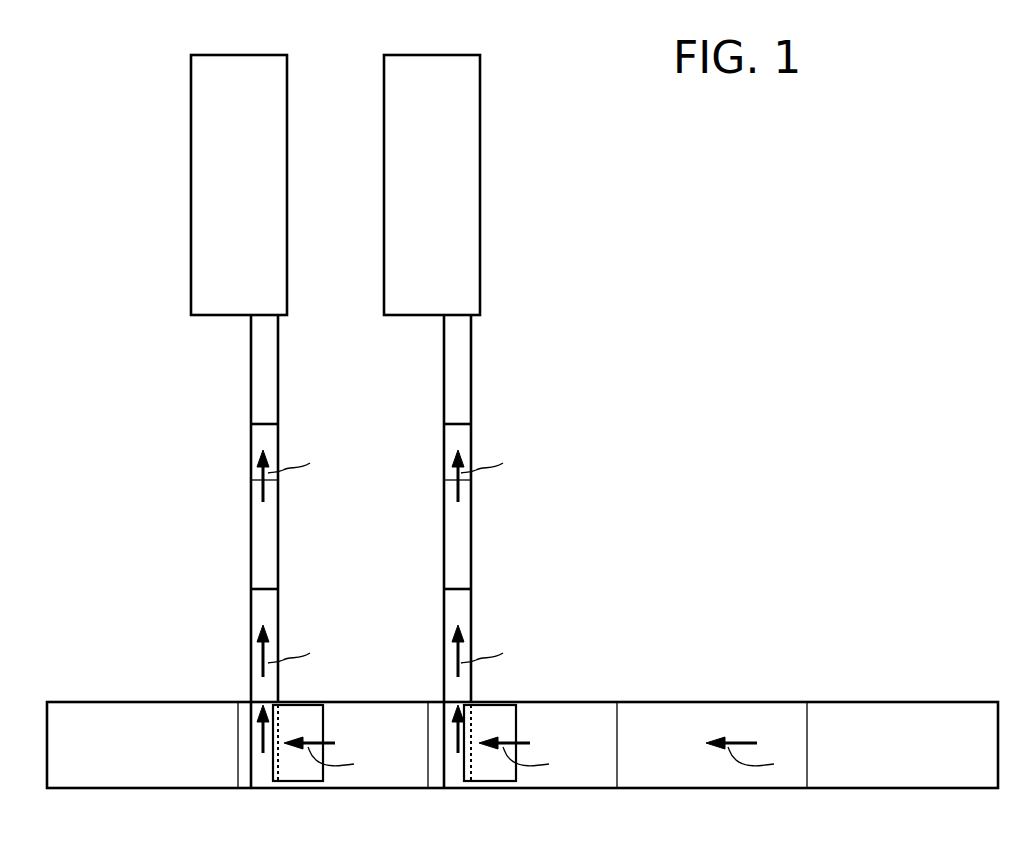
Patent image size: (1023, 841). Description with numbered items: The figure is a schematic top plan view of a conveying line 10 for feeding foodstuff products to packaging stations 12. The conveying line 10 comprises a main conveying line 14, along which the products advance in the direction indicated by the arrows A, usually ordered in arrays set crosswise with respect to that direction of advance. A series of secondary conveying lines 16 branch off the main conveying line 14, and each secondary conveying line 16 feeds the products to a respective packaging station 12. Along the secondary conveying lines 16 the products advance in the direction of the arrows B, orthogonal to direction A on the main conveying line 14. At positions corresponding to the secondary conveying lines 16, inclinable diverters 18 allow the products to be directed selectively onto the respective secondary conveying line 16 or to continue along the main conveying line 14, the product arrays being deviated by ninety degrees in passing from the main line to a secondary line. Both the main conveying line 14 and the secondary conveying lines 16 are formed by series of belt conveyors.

The conveying line 10 is at (832, 390).
The packaging station 12 is at (274, 223).
The main conveying line 14 is at (602, 698).
The secondary conveying line 16 is at (283, 539).
The inclinable diverter 18 is at (303, 718).